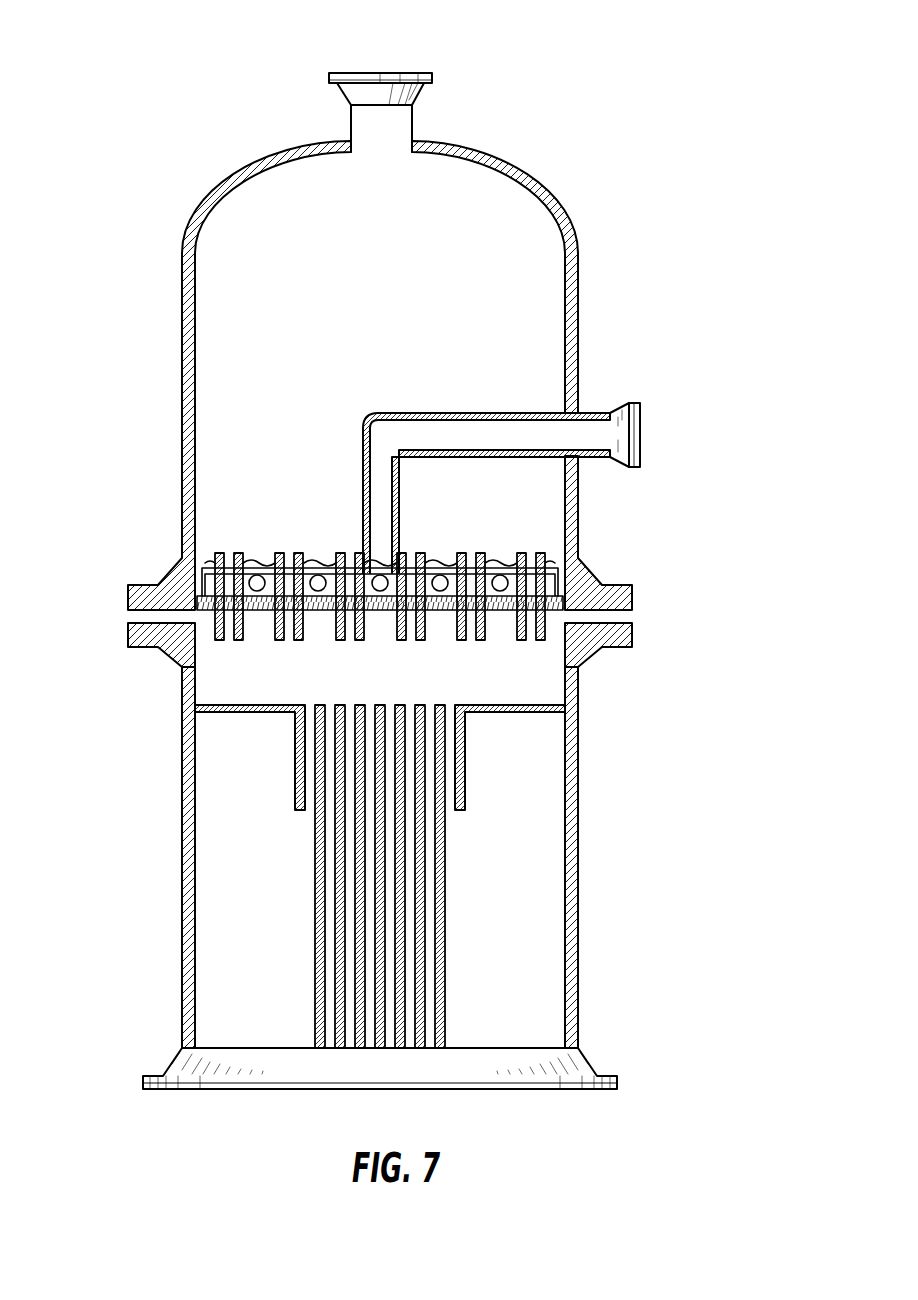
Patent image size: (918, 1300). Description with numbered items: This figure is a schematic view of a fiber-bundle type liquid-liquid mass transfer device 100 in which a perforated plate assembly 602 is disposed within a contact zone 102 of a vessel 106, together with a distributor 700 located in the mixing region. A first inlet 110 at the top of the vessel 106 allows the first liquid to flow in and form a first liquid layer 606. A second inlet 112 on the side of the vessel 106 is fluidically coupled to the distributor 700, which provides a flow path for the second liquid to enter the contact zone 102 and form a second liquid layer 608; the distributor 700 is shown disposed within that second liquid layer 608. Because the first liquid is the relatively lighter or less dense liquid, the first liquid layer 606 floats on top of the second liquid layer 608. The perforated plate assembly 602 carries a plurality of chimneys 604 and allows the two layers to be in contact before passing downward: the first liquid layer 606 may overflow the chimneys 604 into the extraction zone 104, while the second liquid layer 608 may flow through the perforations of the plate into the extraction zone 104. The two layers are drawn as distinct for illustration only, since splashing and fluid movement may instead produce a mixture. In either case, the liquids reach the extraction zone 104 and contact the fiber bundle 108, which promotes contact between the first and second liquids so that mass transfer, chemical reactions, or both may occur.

The fiber-bundle type liquid-liquid mass transfer device 100 is at (627, 61).
The contact zone 102 is at (160, 658).
The extraction zone 104 is at (182, 672).
The vessel 106 is at (578, 265).
The fiber bundle 108 is at (445, 895).
The first inlet 110 is at (352, 73).
The second inlet 112 is at (643, 409).
The perforated plate assembly 602 is at (553, 612).
The chimneys 604 is at (541, 553).
The first liquid layer 606 is at (558, 303).
The second liquid layer 608 is at (318, 562).
The distributor 700 is at (437, 562).